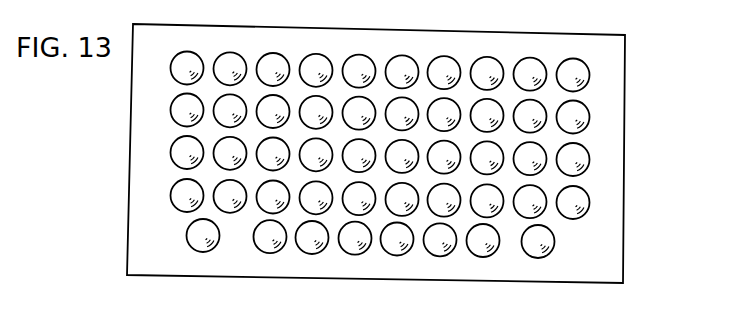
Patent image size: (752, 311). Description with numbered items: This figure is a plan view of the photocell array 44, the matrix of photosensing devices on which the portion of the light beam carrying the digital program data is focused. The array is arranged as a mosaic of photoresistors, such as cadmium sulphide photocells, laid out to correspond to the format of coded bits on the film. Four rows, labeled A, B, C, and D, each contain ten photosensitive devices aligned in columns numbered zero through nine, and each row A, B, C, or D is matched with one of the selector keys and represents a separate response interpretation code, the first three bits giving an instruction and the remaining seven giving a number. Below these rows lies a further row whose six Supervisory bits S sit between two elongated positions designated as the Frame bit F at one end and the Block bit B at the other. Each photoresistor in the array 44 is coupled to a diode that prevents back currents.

The photocell array 44 is at (628, 93).
The row D is at (171, 69).
The row C is at (171, 110).
The row B / Block bit B is at (171, 153).
The row A is at (171, 197).
The Frame bit F is at (188, 236).
The Supervisory bits S is at (305, 248).